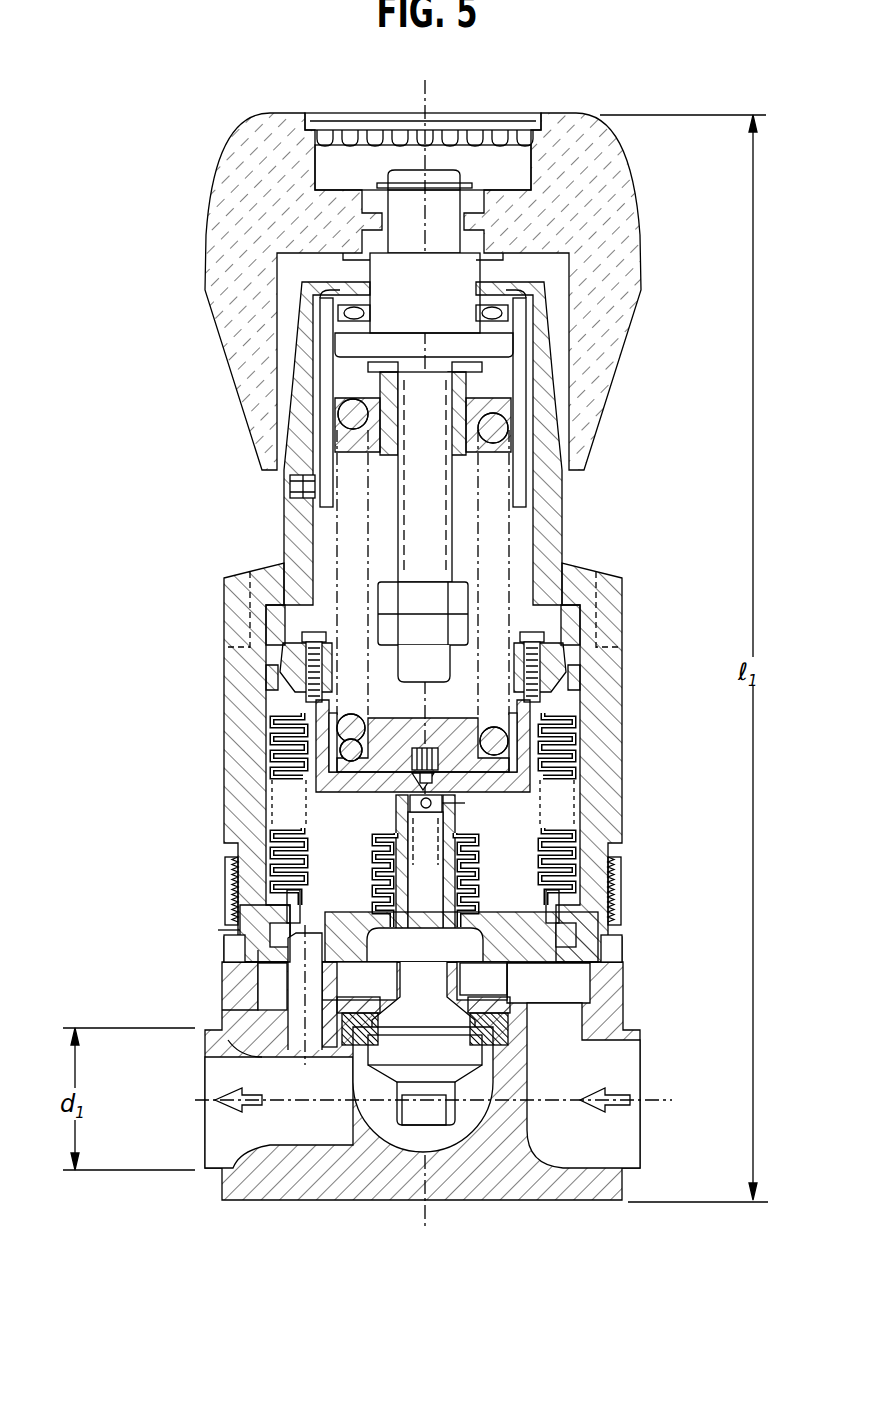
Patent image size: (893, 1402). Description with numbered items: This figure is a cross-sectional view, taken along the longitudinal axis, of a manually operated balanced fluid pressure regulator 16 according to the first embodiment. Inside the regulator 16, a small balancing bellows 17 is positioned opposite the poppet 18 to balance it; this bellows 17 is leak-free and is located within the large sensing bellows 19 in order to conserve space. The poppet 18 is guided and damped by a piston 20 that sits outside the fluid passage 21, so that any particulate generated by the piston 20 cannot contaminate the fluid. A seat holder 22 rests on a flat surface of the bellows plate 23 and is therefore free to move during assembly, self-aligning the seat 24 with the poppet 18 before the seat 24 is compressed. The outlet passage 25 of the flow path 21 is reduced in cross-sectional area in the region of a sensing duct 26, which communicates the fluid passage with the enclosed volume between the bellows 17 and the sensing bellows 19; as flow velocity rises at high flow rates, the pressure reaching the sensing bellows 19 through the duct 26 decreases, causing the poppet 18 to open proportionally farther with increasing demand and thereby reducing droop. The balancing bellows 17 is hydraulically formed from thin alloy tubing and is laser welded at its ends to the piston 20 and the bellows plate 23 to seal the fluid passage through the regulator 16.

The fluid pressure regulator 16 is at (423, 414).
The balancing bellows 17 is at (470, 845).
The poppet 18 is at (300, 1033).
The sensing bellows 19 is at (266, 849).
The piston 20 is at (520, 788).
The fluid passage 21 is at (573, 1150).
The seat holder 22 is at (523, 1010).
The bellows plate 23 is at (287, 927).
The seat 24 is at (510, 1030).
The outlet passage 25 is at (265, 1140).
The sensing duct 26 is at (276, 972).